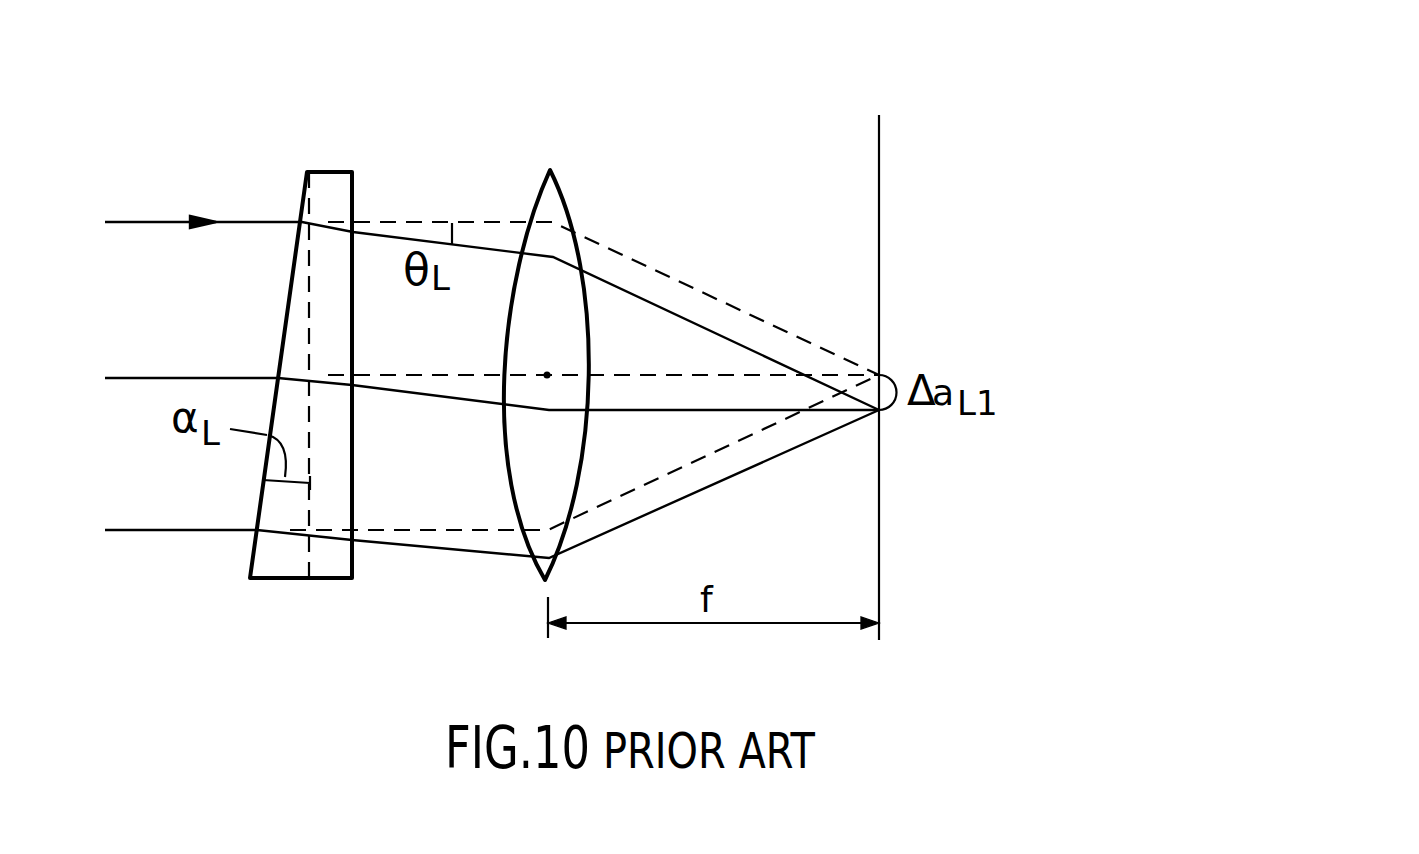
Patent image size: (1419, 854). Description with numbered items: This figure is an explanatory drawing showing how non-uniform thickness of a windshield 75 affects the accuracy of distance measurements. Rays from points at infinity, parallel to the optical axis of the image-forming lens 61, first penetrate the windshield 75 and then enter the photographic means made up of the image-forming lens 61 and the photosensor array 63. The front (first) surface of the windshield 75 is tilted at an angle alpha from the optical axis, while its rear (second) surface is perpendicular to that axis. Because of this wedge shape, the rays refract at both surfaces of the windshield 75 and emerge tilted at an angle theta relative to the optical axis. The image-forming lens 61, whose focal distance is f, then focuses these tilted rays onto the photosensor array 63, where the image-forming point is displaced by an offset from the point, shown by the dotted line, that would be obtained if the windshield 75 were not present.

The windshield 75 is at (336, 178).
The image-forming lens 61 is at (556, 208).
The photosensor array 63 is at (880, 212).